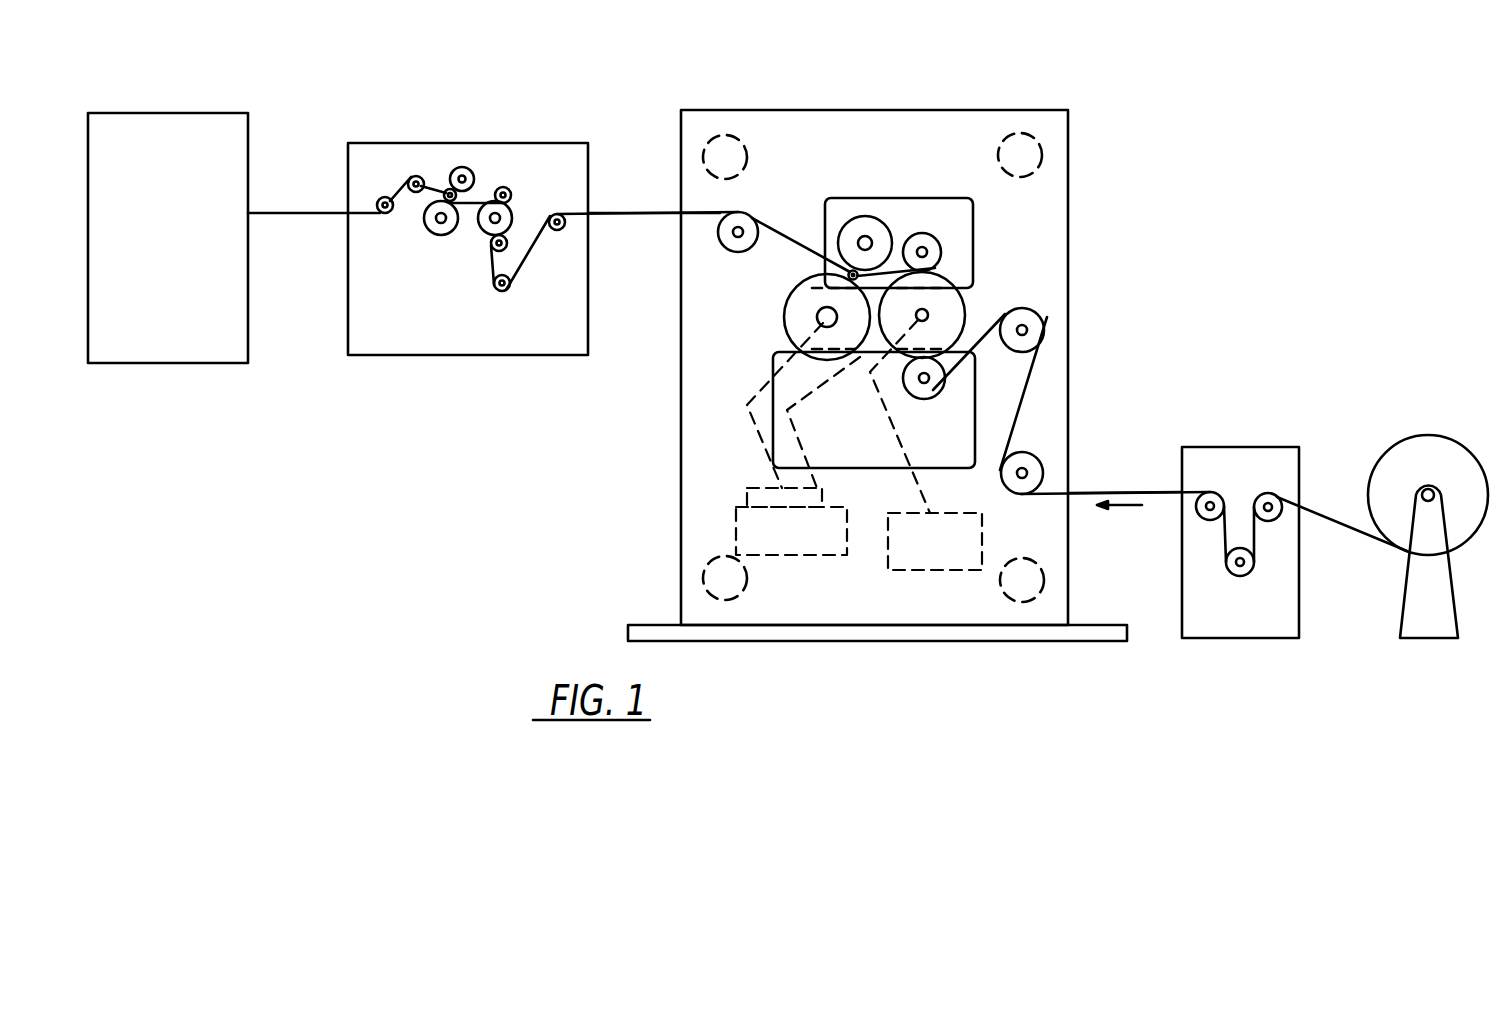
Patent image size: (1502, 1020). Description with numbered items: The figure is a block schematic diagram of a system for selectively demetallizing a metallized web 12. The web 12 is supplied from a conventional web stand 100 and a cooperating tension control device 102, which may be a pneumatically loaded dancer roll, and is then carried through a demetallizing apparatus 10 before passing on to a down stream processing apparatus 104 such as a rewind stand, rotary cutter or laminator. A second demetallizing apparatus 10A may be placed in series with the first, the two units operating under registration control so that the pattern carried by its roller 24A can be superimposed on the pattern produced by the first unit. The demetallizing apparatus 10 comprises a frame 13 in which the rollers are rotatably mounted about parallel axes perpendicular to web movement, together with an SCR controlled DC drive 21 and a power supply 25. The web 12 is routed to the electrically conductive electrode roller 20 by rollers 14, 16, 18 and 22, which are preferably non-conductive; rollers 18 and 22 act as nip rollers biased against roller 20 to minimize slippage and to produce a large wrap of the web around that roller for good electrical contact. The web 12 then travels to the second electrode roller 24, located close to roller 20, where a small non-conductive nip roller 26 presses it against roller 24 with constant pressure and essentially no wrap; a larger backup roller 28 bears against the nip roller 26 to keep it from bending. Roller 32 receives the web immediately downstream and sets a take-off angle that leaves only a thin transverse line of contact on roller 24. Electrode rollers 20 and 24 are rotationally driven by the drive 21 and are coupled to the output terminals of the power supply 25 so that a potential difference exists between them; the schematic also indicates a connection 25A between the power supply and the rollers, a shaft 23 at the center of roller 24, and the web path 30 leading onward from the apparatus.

The demetallizing apparatus 10 is at (913, 336).
The demetallizing apparatus 10A is at (543, 211).
The metallized web 12 is at (1148, 473).
The frame 13 is at (1068, 130).
The roller 14 is at (1032, 465).
The roller 16 is at (1045, 322).
The nip roller 18 is at (927, 394).
The electrode roller 20 is at (963, 302).
The DC drive 21 is at (982, 517).
The nip roller 22 is at (937, 237).
The shaft 23 is at (817, 312).
The second electrode roller 24 is at (791, 317).
The roller 24A is at (432, 230).
The power supply 25 is at (735, 513).
The connector 25A is at (747, 488).
The nip roller 26 is at (849, 270).
The backup roller 28 is at (863, 216).
The web segment 30 is at (647, 215).
The roller 32 is at (727, 251).
The web stand 100 is at (1463, 385).
The tension control device 102 is at (1305, 403).
The down stream processing apparatus 104 is at (180, 113).